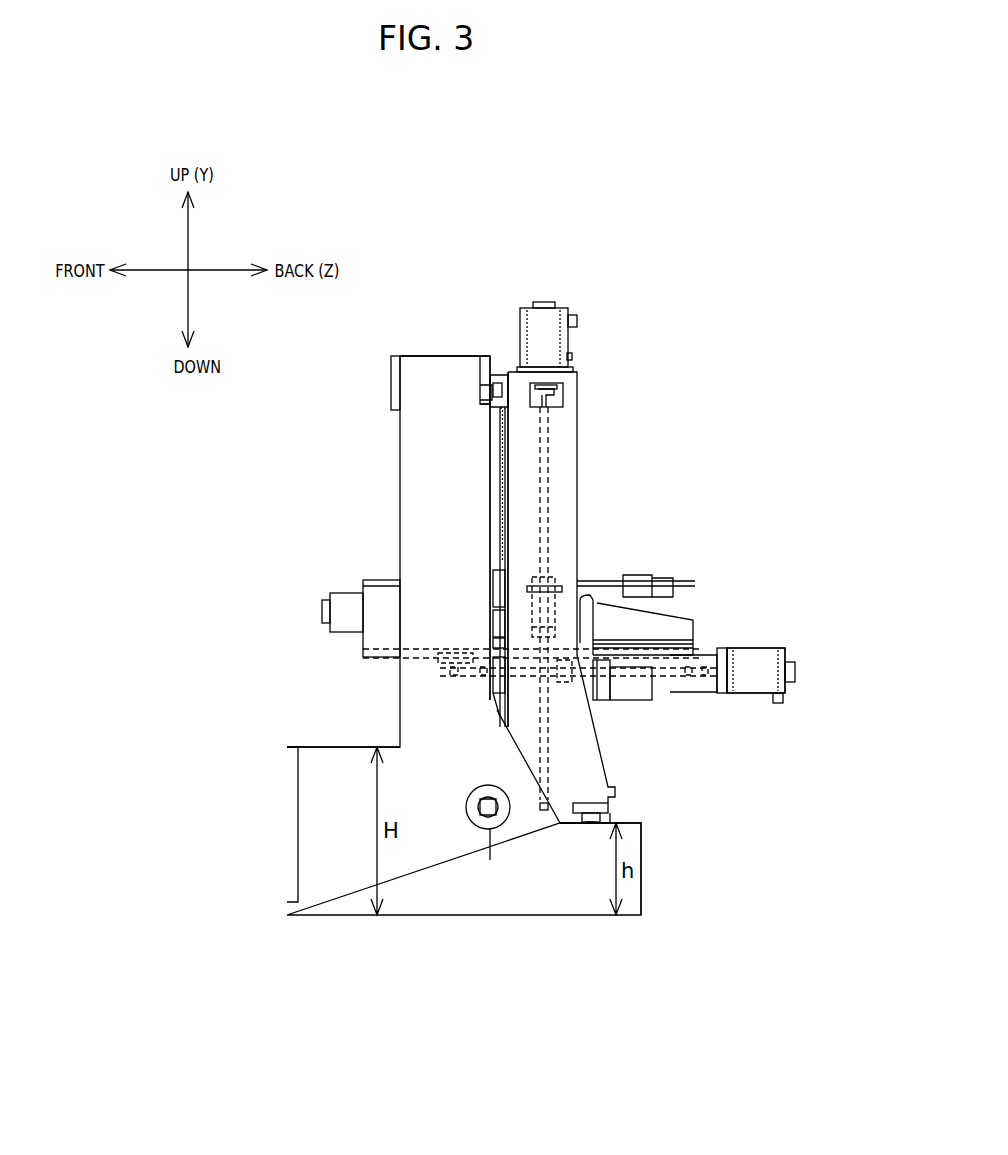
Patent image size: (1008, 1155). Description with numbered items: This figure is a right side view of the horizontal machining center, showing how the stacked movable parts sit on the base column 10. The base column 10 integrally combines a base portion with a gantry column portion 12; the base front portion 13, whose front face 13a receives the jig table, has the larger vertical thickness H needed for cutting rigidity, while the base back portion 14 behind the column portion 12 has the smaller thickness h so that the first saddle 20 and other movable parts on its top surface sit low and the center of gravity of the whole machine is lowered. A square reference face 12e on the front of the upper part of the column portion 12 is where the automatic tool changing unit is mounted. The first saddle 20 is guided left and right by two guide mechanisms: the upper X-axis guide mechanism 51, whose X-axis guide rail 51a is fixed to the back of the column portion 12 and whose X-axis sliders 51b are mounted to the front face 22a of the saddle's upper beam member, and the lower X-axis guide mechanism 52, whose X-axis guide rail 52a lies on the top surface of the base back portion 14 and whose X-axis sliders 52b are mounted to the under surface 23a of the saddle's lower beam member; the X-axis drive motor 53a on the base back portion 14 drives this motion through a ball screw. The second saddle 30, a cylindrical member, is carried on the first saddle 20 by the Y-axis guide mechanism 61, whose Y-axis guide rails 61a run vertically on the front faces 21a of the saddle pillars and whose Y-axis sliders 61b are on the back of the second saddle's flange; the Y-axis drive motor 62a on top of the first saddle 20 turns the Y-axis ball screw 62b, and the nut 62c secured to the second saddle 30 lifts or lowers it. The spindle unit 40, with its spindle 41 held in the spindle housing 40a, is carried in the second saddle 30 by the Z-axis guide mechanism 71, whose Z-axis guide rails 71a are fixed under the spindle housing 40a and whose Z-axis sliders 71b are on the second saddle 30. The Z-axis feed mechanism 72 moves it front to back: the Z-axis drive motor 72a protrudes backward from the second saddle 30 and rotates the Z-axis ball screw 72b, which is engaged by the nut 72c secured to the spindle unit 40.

The base column 10 is at (333, 917).
The column portion 12 is at (410, 467).
The reference face 12e is at (391, 378).
The base front portion 13 is at (320, 817).
The front face 13a is at (288, 845).
The base back portion 14 is at (633, 903).
The first saddle 20 is at (580, 412).
The front face 21a is at (510, 480).
The front face 22a is at (503, 372).
The under surface 23a is at (580, 818).
The second saddle 30 is at (600, 640).
The spindle unit 40 is at (587, 577).
The spindle housing 40a is at (597, 618).
The spindle 41 is at (320, 612).
The X-axis guide mechanism 51 is at (487, 396).
The X-axis guide rail 51a is at (489, 388).
The X-axis slider 51b is at (500, 378).
The X-axis guide mechanism 52 is at (618, 806).
The X-axis guide rail 52a is at (593, 825).
The X-axis slider 52b is at (605, 812).
The X-axis drive motor 53a is at (490, 830).
The Y-axis guide mechanism 61 is at (498, 542).
The Y-axis guide rail 61a is at (503, 442).
The Y-axis slider 61b is at (493, 582).
The Y-axis drive motor 62a is at (568, 312).
The Y-axis ball screw 62b is at (548, 485).
The nut 62c is at (548, 577).
The Z-axis guide mechanism 71 is at (383, 658).
The Z-axis guide rail 71a is at (680, 652).
The Z-axis slider 71b is at (462, 657).
The Z-axis feed mechanism 72 is at (798, 658).
The Z-axis drive motor 72a is at (768, 653).
The Z-axis ball screw 72b is at (640, 677).
The nut 72c is at (603, 683).